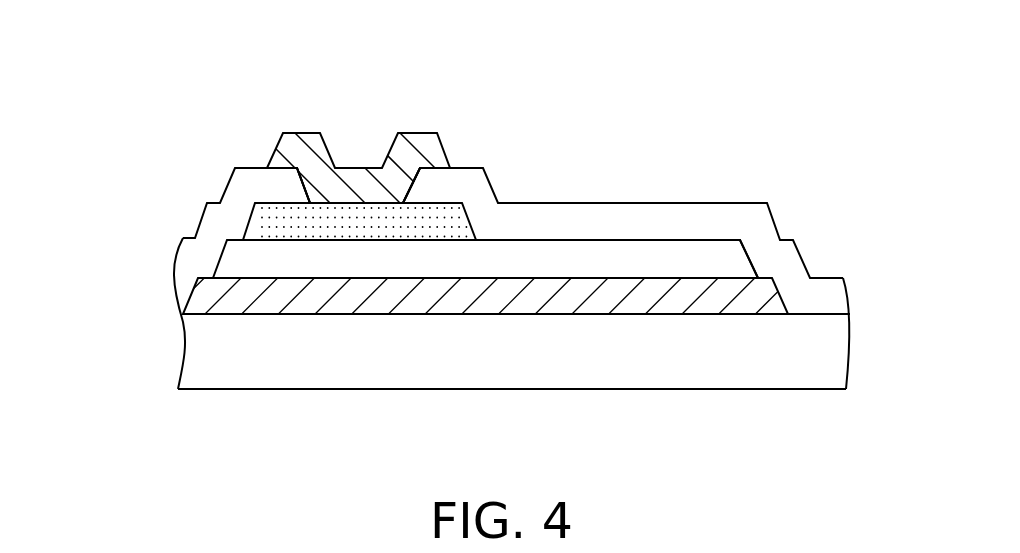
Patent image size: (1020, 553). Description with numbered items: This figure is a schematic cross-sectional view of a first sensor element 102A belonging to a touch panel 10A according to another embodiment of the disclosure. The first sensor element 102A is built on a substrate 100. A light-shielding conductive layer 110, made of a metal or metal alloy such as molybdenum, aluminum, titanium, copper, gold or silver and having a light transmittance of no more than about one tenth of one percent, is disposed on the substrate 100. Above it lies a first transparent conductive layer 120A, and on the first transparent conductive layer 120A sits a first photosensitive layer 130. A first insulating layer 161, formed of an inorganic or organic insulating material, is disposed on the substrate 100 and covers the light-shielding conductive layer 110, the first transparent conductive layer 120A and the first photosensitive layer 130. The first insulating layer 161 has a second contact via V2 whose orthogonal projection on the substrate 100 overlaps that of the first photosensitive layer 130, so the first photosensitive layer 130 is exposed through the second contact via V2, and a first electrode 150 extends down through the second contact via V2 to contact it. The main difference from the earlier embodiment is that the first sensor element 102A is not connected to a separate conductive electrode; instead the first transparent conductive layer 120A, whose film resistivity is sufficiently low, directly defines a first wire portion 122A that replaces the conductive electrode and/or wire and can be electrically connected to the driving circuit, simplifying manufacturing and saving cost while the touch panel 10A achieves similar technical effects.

The touch panel 10A is at (472, 239).
The substrate 100 is at (835, 352).
The first insulating layer 161 is at (835, 298).
The first sensor element 102A is at (107, 127).
The light-shielding conductive layer 110 is at (207, 290).
The first transparent conductive layer 120A is at (233, 257).
The first wire portion 122A is at (607, 256).
The first photosensitive layer 130 is at (250, 220).
The first electrode 150 is at (286, 149).
The second contact via V2 is at (303, 187).